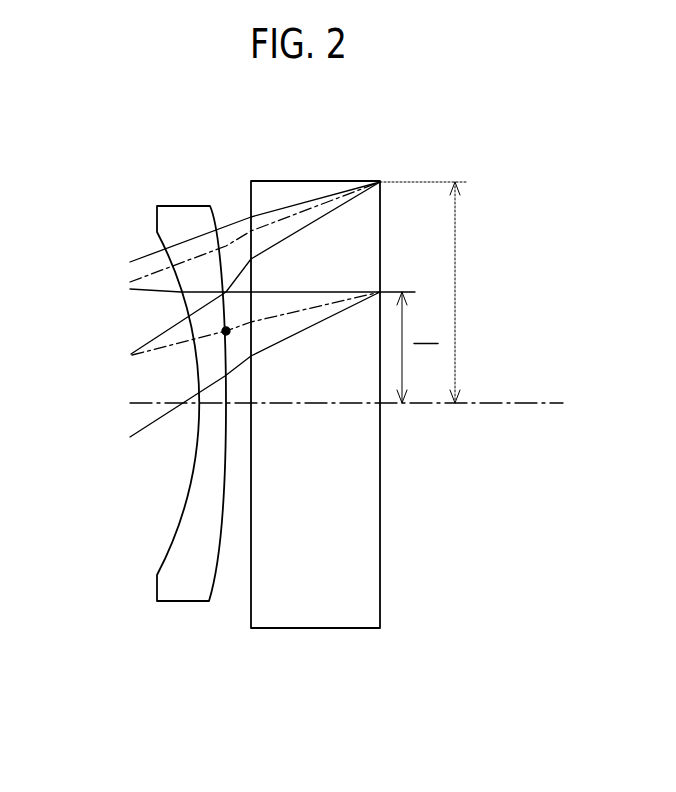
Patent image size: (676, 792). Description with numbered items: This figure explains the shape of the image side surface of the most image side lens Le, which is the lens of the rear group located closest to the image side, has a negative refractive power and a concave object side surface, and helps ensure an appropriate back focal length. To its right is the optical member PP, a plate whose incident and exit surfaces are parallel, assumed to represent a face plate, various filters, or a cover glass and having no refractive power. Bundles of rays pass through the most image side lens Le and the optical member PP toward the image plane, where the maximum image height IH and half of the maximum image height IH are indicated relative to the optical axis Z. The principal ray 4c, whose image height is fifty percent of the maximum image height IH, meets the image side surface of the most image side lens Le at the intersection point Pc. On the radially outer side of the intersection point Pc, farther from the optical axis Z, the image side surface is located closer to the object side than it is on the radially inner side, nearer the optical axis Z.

The most image side lens Le is at (182, 603).
The optical member PP is at (318, 630).
The optical axis Z is at (548, 405).
The principal ray 4c is at (162, 347).
The intersection point Pc is at (226, 333).
The maximum image height IH is at (423, 292).